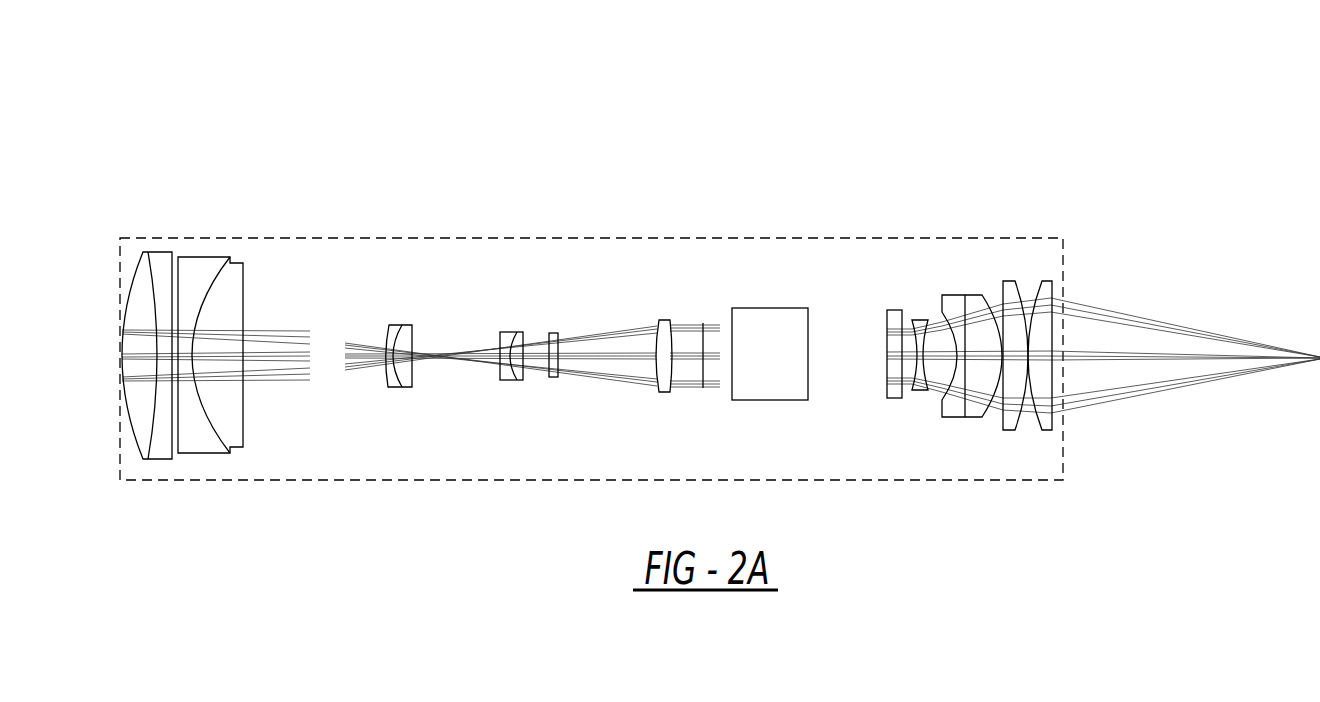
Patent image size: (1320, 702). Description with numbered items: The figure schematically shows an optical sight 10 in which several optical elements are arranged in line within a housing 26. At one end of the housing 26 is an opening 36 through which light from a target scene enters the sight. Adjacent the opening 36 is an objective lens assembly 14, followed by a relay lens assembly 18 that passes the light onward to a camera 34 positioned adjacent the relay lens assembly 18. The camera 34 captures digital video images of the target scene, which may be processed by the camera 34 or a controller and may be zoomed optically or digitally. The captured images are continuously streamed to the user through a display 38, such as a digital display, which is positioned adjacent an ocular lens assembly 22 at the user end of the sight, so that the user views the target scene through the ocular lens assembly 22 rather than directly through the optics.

The optical sight 10 is at (876, 80).
The objective lens assembly 14 is at (176, 226).
The opening 36 is at (112, 268).
The relay lens assembly 18 is at (541, 296).
The camera 34 is at (758, 292).
The housing 26 is at (848, 238).
The display 38 is at (905, 306).
The ocular lens assembly 22 is at (1009, 267).